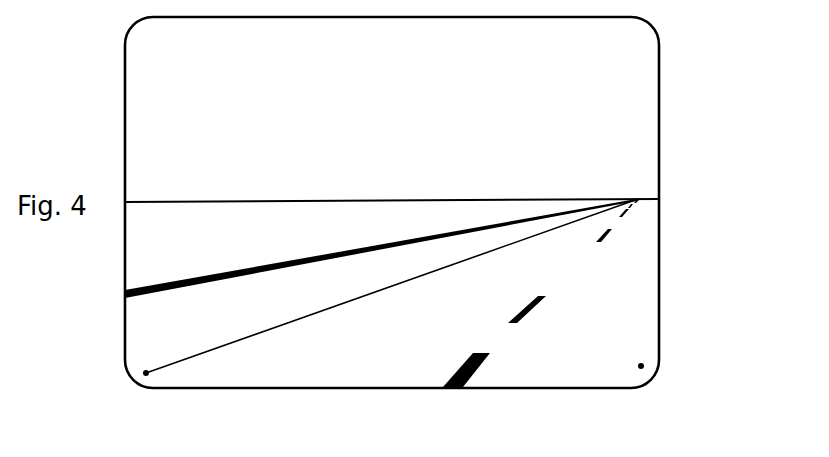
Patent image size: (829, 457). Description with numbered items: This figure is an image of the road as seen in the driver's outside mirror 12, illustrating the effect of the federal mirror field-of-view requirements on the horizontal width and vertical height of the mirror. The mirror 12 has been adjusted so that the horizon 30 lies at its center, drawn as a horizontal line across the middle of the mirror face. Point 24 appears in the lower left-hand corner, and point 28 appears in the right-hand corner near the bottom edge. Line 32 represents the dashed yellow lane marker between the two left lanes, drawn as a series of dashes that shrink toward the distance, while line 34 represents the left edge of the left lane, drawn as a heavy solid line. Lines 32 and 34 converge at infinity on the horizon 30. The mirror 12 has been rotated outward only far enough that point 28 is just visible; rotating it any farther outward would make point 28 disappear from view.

The mirror 12 is at (678, 111).
The horizon 30 is at (282, 201).
The line representing the left edge of the left lane 34 is at (205, 279).
The point 24 is at (146, 371).
The line representing the dashed yellow lane marker 32 is at (520, 313).
The point 28 is at (641, 365).